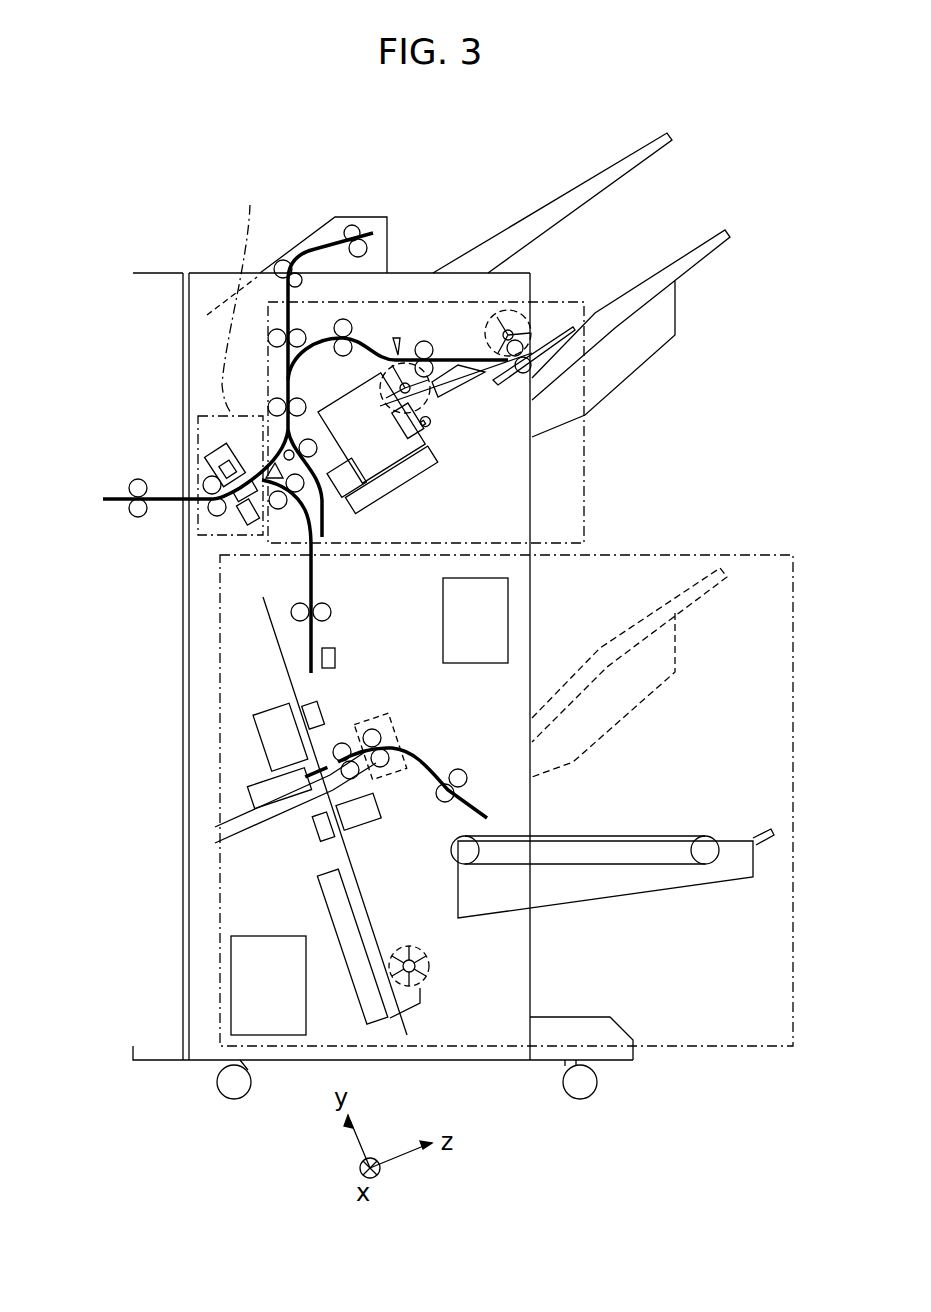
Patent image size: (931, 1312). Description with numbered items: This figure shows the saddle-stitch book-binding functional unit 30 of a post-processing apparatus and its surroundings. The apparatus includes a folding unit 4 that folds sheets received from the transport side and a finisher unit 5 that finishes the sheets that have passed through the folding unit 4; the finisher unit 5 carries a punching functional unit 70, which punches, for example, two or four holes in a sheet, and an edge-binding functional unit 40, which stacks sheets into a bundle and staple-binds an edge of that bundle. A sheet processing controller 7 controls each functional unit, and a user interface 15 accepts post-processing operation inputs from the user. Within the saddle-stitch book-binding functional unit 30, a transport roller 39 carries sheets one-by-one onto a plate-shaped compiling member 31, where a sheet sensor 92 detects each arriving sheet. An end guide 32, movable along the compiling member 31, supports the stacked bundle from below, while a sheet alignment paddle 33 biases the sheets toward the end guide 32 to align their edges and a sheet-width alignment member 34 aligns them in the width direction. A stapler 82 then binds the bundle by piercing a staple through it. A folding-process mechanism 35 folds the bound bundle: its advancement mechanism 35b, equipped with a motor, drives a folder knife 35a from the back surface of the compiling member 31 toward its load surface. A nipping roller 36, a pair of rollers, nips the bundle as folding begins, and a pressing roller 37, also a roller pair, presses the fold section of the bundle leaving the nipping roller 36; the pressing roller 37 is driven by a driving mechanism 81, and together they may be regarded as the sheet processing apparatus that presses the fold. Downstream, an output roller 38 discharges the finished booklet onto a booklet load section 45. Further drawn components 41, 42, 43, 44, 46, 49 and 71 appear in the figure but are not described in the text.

The folding unit 4 is at (148, 273).
The finisher unit 5 is at (497, 1062).
The sheet processing controller 7 is at (286, 1036).
The user interface 15 is at (443, 622).
The saddle-stitch book-binding functional unit 30 is at (741, 555).
The compiling member 31 is at (293, 692).
The end guide 32 is at (330, 908).
The sheet alignment paddle 33 is at (429, 967).
The sheet-width alignment member 34 is at (254, 732).
The folding-process mechanism 35 is at (238, 760).
The folder knife 35a is at (325, 758).
The advancement mechanism 35b is at (258, 782).
The nipping roller 36 is at (316, 831).
The pressing roller 37 is at (295, 843).
The output roller 38 is at (467, 772).
The transport roller 39 is at (292, 612).
The edge-binding functional unit 40 is at (584, 467).
The feed rollers 41 is at (238, 503).
The sensor 42 is at (267, 466).
The conveying rollers 43 is at (272, 404).
The registration rollers 44 is at (280, 512).
The booklet load section 45 is at (660, 834).
The inlet rollers 46 is at (133, 480).
The discharge tray 49 is at (573, 187).
The punching functional unit 70 is at (242, 295).
The feeding unit 71 is at (205, 502).
The driving mechanism 81 is at (400, 730).
The stapler 82 is at (365, 828).
The sheet sensor 92 is at (336, 660).